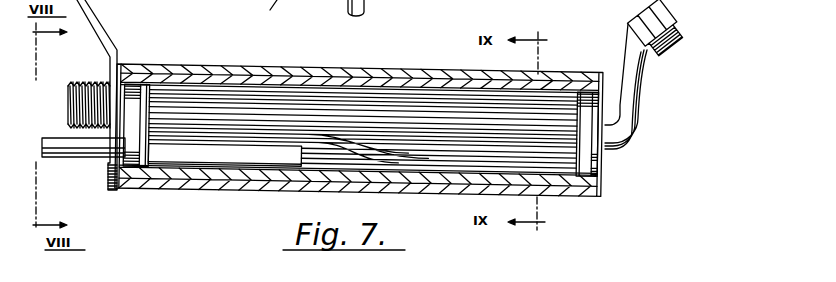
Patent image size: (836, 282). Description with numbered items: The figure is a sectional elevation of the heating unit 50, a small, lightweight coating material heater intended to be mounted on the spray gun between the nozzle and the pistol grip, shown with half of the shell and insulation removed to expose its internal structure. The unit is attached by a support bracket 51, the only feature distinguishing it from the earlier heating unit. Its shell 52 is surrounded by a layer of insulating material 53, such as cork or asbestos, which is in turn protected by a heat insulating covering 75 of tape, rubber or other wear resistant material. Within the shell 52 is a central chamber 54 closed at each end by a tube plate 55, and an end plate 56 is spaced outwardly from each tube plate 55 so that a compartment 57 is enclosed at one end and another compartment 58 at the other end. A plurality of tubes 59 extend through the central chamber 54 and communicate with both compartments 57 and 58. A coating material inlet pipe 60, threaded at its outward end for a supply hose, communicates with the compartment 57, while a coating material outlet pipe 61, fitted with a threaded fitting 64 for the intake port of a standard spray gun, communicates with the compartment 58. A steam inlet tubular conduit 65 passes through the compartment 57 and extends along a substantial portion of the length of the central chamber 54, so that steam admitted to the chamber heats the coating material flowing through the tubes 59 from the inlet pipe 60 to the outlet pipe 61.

The heating unit 50 is at (563, 64).
The support bracket 51 is at (103, 23).
The shell 52 is at (203, 80).
The layer of insulating material 53 is at (263, 80).
The central chamber 54 is at (282, 168).
The tube plate 55 is at (128, 163).
The end plate 56 is at (118, 162).
The compartment 57 is at (122, 165).
The compartment 58 is at (587, 164).
The tubes 59 is at (452, 163).
The coating material inlet pipe 60 is at (90, 82).
The coating material outlet pipe 61 is at (641, 92).
The threaded fitting 64 is at (681, 44).
The steam inlet tubular conduit 65 is at (223, 152).
The heat insulating covering 75 is at (323, 69).